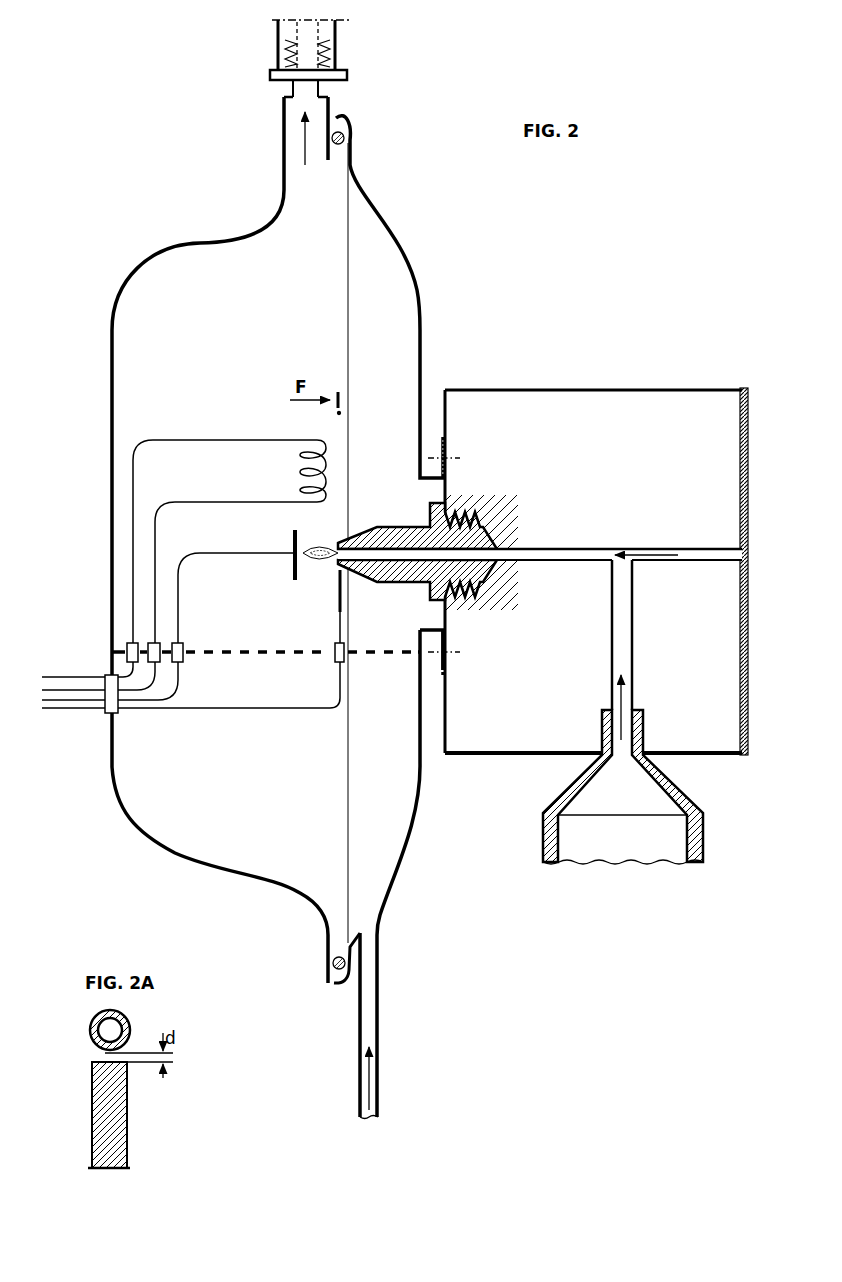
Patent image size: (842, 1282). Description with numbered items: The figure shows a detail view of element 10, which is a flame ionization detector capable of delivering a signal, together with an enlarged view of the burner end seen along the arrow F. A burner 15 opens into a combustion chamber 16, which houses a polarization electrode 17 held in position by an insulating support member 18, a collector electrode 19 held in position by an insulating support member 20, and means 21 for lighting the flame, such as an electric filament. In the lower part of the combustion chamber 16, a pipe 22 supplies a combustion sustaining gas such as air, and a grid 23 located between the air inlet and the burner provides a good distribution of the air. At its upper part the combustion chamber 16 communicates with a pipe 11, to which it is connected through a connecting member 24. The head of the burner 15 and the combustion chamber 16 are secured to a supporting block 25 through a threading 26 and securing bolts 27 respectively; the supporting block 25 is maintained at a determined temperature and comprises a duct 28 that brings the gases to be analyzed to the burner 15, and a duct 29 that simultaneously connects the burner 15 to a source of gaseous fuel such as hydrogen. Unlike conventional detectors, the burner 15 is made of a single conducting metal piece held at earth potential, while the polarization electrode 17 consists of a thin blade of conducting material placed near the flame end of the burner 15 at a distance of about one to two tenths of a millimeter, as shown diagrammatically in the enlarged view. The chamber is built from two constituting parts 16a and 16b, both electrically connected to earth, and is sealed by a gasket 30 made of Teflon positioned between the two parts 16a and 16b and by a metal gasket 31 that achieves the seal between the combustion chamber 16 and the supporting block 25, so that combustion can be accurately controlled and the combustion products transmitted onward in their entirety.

In FIG. 2, the element 10 is at (540, 275).
In FIG. 2, the pipe 11 is at (278, 25).
In FIG. 2, the connecting member 24 is at (288, 80).
In FIG. 2, the combustion chamber 16 is at (165, 778).
In FIG. 2, the constituting part of combustion chamber 16a is at (155, 840).
In FIG. 2, the constituting part of combustion chamber 16b is at (395, 888).
In FIG. 2, the burner 15 is at (385, 527).
In FIG. 2A, the burner 15 is at (90, 1028).
In FIG. 2, the polarization electrode 17 is at (333, 587).
In FIG. 2A, the polarization electrode 17 is at (92, 1112).
In FIG. 2, the insulating support member 18 is at (335, 658).
In FIG. 2, the collector electrode 19 is at (290, 571).
In FIG. 2, the insulating support member 20 is at (183, 661).
In FIG. 2, the means for lighting the flame 21 is at (300, 472).
In FIG. 2, the pipe 22 is at (375, 1037).
In FIG. 2, the grid 23 is at (380, 658).
In FIG. 2, the supporting block 25 is at (640, 388).
In FIG. 2, the threading 26 is at (478, 516).
In FIG. 2, the securing bolts 27 is at (450, 650).
In FIG. 2, the duct 28 is at (622, 665).
In FIG. 2, the duct 29 is at (697, 562).
In FIG. 2, the gasket 30 is at (336, 975).
In FIG. 2, the metal gasket 31 is at (447, 662).